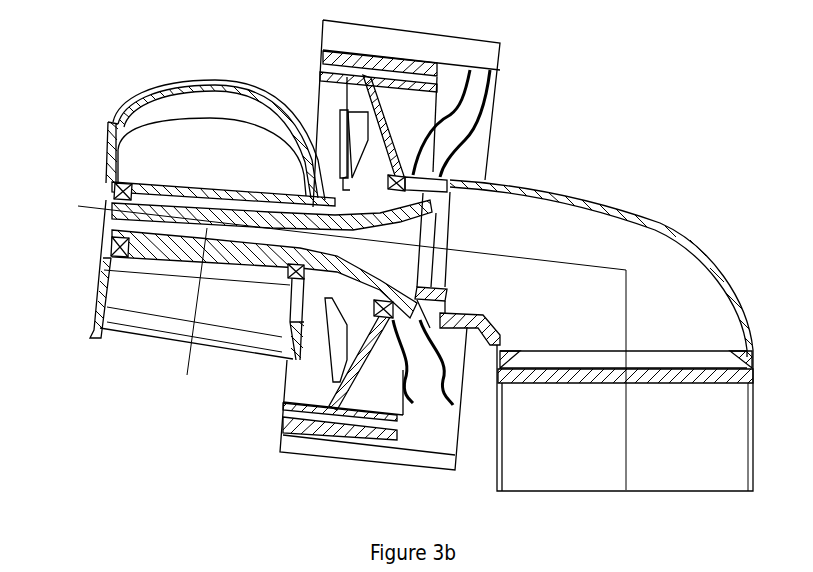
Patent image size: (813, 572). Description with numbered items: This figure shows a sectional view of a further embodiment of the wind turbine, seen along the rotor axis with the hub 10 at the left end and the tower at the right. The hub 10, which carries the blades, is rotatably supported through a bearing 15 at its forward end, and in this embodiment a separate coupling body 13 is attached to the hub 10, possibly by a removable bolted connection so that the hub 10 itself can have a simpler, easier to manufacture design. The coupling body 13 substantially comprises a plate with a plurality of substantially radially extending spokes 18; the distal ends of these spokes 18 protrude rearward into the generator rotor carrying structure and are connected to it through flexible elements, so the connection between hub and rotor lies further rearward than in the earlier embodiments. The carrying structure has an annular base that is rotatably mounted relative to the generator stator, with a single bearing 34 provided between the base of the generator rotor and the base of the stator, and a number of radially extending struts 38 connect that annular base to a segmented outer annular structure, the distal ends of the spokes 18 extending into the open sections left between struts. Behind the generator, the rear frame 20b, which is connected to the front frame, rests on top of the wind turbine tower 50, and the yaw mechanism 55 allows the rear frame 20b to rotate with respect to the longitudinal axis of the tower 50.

The hub 10 is at (100, 292).
The coupling body 13 is at (357, 122).
The bearing 15 is at (100, 193).
The spokes 18 is at (330, 153).
The rear frame 20b is at (630, 220).
The bearing 34 is at (403, 178).
The struts 38 is at (335, 386).
The wind turbine tower 50 is at (750, 455).
The yaw mechanism 55 is at (775, 360).